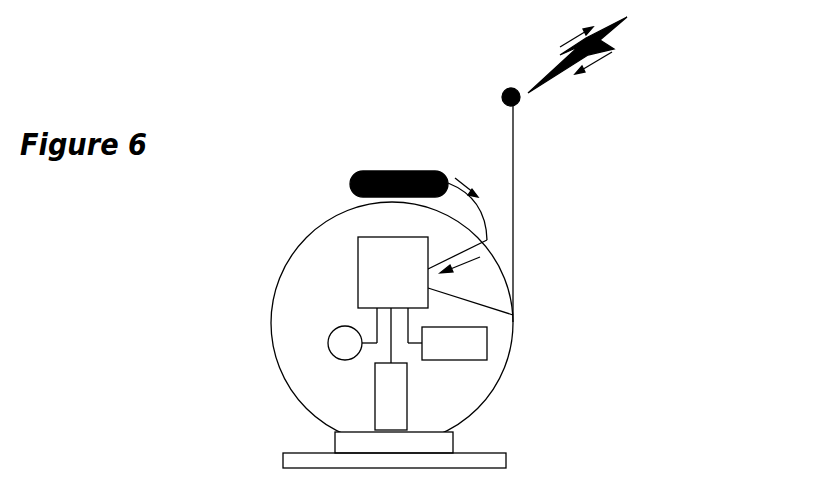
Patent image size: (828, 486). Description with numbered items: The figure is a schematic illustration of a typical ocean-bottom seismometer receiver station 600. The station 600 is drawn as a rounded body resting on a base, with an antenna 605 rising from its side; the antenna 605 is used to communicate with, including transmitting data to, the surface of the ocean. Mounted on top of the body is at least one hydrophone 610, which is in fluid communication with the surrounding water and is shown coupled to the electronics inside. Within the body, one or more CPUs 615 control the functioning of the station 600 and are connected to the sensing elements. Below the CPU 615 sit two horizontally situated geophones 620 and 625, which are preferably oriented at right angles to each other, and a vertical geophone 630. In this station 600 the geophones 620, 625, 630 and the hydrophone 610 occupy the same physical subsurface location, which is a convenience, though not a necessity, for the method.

The OBS receiver station 600 is at (580, 240).
The antenna 605 is at (514, 163).
The hydrophone 610 is at (367, 172).
The CPU 615 is at (358, 262).
The horizontally situated geophone 620 is at (350, 326).
The horizontally situated geophone 625 is at (428, 327).
The vertical geophone 630 is at (408, 395).